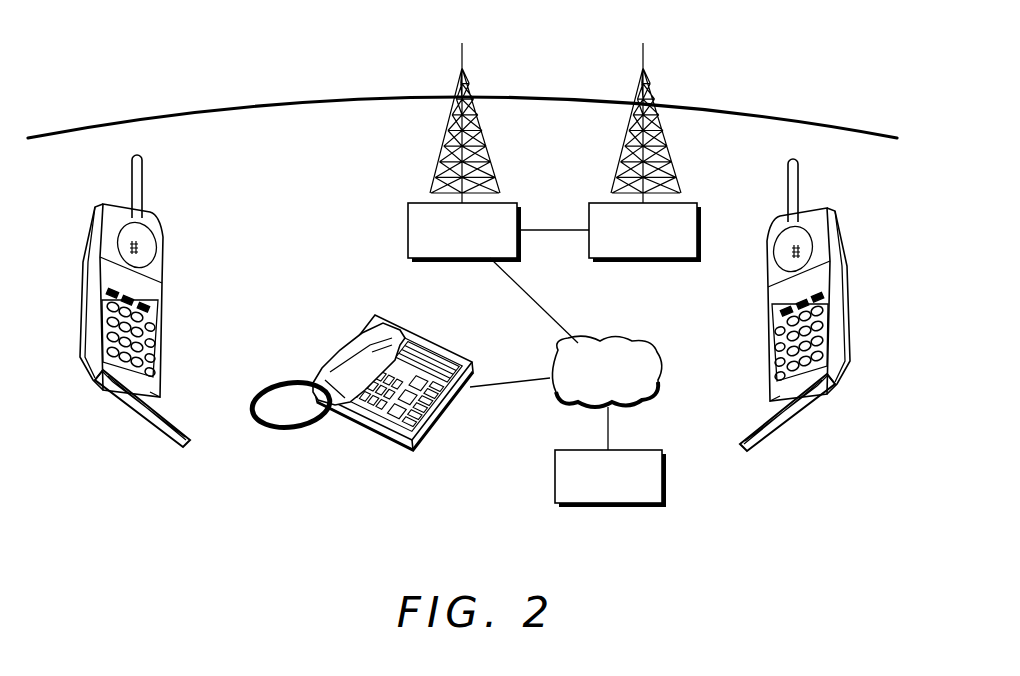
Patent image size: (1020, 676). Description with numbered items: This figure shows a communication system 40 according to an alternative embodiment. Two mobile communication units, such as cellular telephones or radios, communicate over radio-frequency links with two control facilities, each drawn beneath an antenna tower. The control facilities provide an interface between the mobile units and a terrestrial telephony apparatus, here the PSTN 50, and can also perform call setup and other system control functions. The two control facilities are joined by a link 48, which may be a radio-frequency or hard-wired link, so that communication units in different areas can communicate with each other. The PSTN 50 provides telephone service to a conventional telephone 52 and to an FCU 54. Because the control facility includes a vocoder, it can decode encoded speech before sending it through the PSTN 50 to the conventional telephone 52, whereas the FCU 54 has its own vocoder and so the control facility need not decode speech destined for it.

The communication system 40 is at (258, 517).
The link 48 is at (527, 230).
The PSTN 50 is at (660, 352).
The conventional telephone 52 is at (353, 358).
The FCU 54 is at (553, 477).